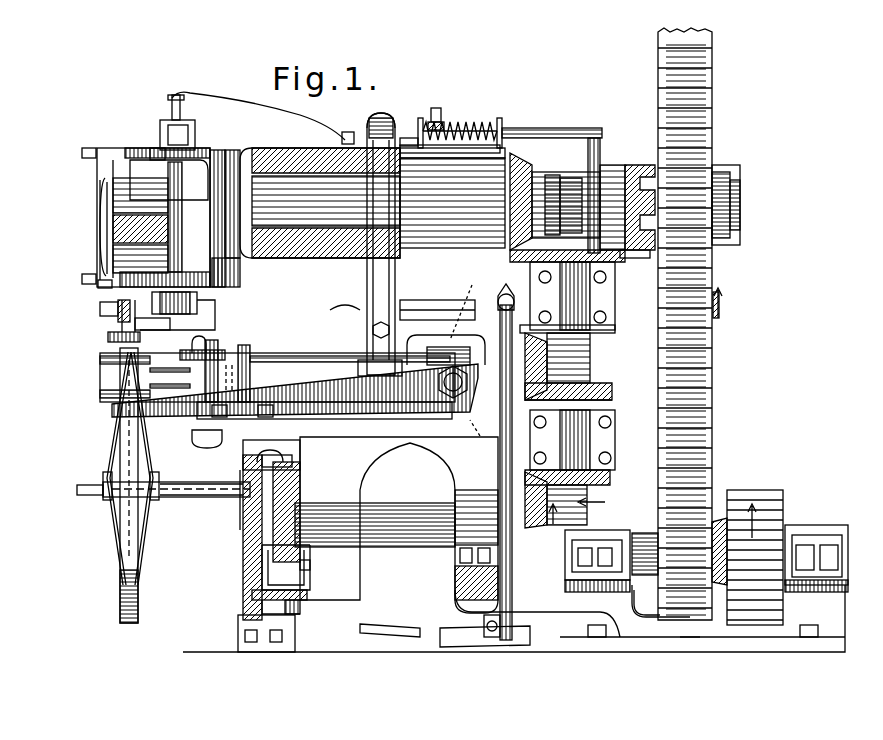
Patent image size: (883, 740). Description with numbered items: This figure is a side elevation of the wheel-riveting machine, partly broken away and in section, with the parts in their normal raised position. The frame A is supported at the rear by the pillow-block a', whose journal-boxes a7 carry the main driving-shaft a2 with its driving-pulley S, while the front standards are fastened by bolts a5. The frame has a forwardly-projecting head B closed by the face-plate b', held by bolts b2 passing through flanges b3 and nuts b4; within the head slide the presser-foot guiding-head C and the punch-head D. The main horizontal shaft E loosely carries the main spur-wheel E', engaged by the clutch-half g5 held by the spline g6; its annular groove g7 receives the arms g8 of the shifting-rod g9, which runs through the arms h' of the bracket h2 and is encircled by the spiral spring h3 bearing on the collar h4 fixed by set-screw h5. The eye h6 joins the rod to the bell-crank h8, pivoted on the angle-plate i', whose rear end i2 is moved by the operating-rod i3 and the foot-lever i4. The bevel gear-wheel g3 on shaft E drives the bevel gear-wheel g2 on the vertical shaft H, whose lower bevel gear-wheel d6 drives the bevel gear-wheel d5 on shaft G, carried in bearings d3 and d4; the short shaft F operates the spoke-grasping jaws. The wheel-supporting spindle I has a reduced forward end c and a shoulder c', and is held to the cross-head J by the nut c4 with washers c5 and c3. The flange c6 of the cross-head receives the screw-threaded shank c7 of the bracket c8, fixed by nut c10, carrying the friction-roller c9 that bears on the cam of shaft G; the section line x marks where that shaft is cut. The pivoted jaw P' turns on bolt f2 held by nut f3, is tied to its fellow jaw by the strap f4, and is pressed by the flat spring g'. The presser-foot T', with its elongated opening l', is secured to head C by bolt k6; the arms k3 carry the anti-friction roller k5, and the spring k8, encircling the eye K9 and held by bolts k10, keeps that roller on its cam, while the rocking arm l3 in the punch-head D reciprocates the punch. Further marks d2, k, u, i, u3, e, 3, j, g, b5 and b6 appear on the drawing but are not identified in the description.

The main spur-wheel E' is at (699, 324).
The driving-pulley S is at (747, 549).
The journal-boxes a7 is at (812, 526).
The main driving-shaft a2 is at (644, 532).
The pillow-block a' is at (647, 611).
The base nut d2 is at (226, 627).
The key k is at (434, 399).
The foot-lever i4 is at (445, 627).
The nut u is at (487, 618).
The shaft G is at (399, 525).
The bearing d3 is at (375, 516).
The bearing d4 is at (476, 545).
The operating-rod i3 is at (510, 467).
The rod head i is at (492, 297).
The frame A is at (401, 432).
The cross-head J is at (243, 540).
The washer c5 is at (240, 500).
The wheel-supporting spindle I is at (238, 457).
The washer c3 is at (277, 465).
The section line x x is at (310, 562).
The bracket c8 is at (310, 580).
The friction-roller c9 is at (310, 568).
The flange c6 is at (292, 595).
The nut c10 is at (311, 608).
The screw-threaded shank c7 is at (297, 615).
The presser-foot T' is at (111, 461).
The forward end of spindle c is at (163, 478).
The enlarged portion of spindle c' is at (392, 435).
The spoke-grasping jaw P' is at (266, 377).
The metallic strap f4 is at (225, 356).
The nut f3 is at (194, 337).
The bolt f2 is at (211, 382).
The bolts a5 is at (310, 408).
The flat steel spring g' is at (295, 393).
The lug u3 is at (252, 450).
The nut e is at (467, 381).
The nut c4 is at (445, 350).
The short shaft F is at (437, 303).
The section line 3 is at (473, 359).
The stud j is at (345, 300).
The bell-crank h8 is at (380, 244).
The eye h6 is at (387, 113).
The spiral spring h3 is at (460, 202).
The arms h' is at (460, 125).
The set-screw h5 is at (440, 111).
The bracket h2 is at (450, 151).
The adjusting collar h4 is at (412, 149).
The shifting-rod g9 is at (552, 183).
The clutch-half g5 is at (640, 165).
The bevel gear-wheel g3 is at (531, 198).
The gear hub g is at (567, 214).
The spline g6 is at (558, 193).
The arms g8 is at (575, 178).
The annular groove g7 is at (612, 254).
The bevel gear-wheel g2 is at (640, 260).
The angle-plate i' is at (572, 296).
The vertical shaft H is at (567, 362).
The rear end of bell-crank i2 is at (572, 440).
The bevel gear-wheel d6 is at (581, 499).
The bevel gear-wheel d5 is at (562, 512).
The main horizontal shaft E is at (372, 203).
The head B is at (233, 206).
The arms k3 is at (234, 218).
The elongated central opening l' is at (140, 195).
The rocking arm l3 is at (140, 255).
The punch-head D is at (160, 150).
The pin b5 is at (150, 150).
The presser-foot guiding-head C is at (183, 135).
The eye K9 is at (172, 106).
The spring k8 is at (258, 116).
The bolts k10 is at (350, 129).
The bolts b2 is at (79, 208).
The nuts b4 is at (100, 268).
The face-plate b' is at (90, 228).
The flanges b3 is at (98, 284).
The bolt b6 is at (100, 312).
The bolt k6 is at (185, 311).
The anti-friction roller k5 is at (152, 319).